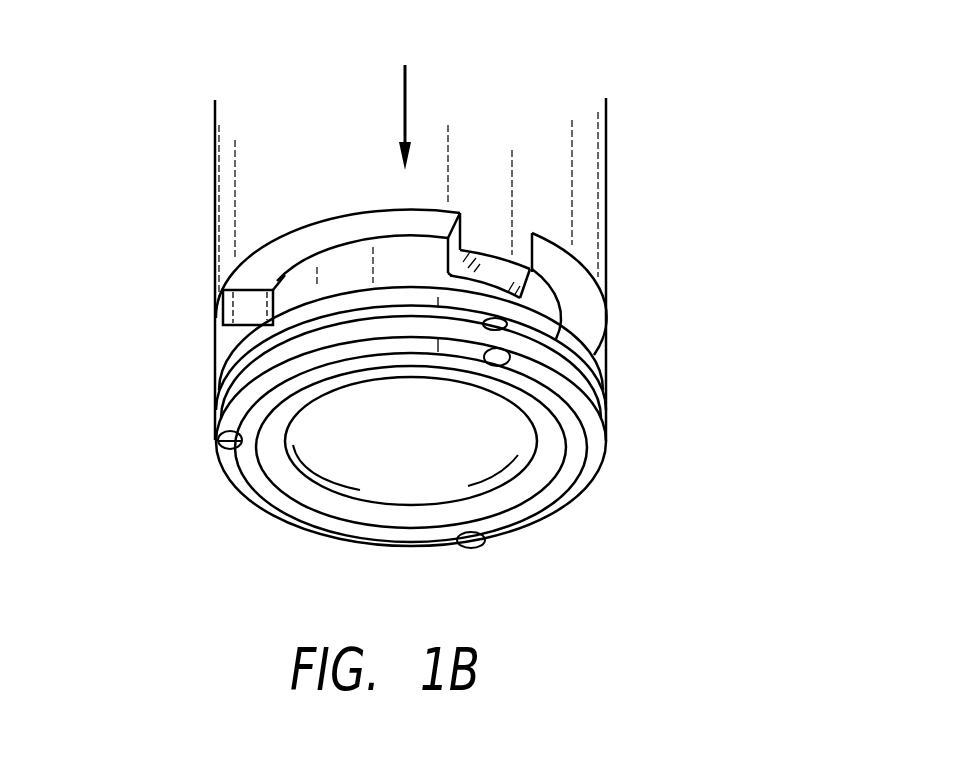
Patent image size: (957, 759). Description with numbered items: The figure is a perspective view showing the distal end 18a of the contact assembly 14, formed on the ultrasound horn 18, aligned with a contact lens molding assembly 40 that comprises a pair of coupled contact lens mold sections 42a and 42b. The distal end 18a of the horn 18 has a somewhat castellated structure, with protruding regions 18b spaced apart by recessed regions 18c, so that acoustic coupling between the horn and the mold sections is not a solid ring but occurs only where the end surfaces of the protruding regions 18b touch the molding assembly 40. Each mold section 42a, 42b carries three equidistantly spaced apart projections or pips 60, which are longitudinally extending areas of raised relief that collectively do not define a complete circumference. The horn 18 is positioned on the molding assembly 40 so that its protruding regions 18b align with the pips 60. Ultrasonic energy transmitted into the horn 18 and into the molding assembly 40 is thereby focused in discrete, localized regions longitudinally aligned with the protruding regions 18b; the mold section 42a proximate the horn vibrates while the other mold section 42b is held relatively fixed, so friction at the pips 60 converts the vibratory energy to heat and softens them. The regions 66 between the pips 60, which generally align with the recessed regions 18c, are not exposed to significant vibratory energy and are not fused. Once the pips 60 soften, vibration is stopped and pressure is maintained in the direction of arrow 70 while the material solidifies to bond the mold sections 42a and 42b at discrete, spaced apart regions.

The contact assembly 14 is at (194, 158).
The ultrasound horn 18 is at (618, 179).
The distal end 18a is at (607, 263).
The protruding regions 18b is at (458, 272).
The recessed regions 18c is at (305, 243).
The contact lens molding assembly 40 is at (626, 444).
The mold section 42a is at (578, 368).
The mold section 42b is at (580, 478).
The pips 60 is at (507, 326).
The regions 66 is at (333, 322).
The arrow 70 is at (408, 97).